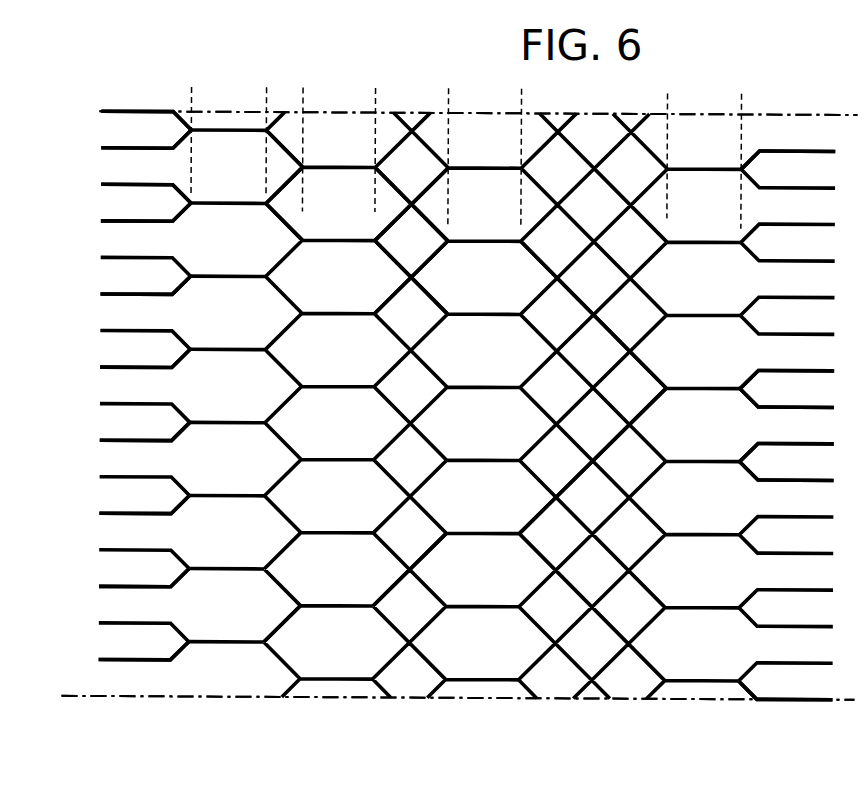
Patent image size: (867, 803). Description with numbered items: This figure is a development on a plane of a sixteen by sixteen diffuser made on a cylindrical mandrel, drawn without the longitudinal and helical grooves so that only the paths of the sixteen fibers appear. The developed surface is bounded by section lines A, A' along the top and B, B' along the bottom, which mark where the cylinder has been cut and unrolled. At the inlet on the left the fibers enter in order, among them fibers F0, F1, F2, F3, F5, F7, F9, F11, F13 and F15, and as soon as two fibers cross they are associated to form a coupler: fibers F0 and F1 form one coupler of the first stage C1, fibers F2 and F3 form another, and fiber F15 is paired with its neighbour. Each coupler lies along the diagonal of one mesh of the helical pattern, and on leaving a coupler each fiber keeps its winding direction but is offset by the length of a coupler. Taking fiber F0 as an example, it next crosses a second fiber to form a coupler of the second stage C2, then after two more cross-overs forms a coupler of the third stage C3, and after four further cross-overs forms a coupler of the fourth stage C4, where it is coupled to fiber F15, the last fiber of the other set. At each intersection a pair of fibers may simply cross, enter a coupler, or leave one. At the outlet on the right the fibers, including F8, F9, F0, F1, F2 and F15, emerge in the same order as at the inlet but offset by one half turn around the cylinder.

The fiber F0 is at (114, 111).
The fiber F1 is at (114, 147).
The fiber F2 is at (114, 184).
The fiber F3 is at (114, 220).
The fiber F5 is at (112, 294).
The fiber F7 is at (112, 367).
The fiber F8 is at (812, 695).
The fiber F9 is at (112, 440).
The fiber F11 is at (112, 513).
The fiber F13 is at (112, 586).
The fiber F15 is at (112, 659).
The first coupler stage C1 is at (267, 87).
The second coupler stage C2 is at (376, 87).
The third coupler stage C3 is at (522, 87).
The fourth coupler stage C4 is at (742, 90).
The section line A end A is at (478, 96).
The section line A' end A' is at (479, 100).
The section line B end B is at (457, 713).
The section line B' end B' is at (458, 709).